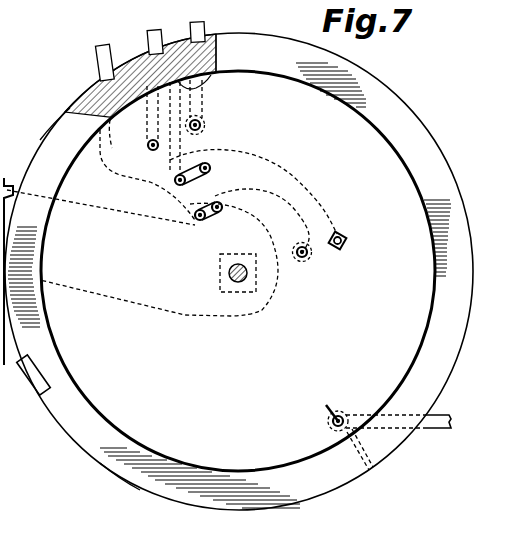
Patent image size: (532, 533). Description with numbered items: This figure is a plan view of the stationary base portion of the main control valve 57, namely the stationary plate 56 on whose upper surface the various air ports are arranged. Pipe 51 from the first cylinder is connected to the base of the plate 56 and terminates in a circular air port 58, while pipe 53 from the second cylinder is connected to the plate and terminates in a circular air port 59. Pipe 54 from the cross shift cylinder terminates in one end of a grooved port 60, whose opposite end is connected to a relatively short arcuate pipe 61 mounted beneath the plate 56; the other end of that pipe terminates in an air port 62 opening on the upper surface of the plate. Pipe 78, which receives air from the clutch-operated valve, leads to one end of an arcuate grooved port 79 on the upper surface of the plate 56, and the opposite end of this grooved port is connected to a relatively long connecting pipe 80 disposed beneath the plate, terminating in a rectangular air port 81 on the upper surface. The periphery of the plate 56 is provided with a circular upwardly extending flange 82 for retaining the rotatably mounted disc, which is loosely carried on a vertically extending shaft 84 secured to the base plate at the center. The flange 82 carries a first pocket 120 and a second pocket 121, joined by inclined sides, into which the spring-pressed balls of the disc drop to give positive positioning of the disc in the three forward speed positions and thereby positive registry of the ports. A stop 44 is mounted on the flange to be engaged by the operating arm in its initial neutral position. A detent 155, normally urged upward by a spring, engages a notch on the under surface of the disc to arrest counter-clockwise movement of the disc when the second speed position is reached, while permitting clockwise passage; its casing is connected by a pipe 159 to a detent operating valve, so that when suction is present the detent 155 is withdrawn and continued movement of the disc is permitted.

The bracket 44 is at (38, 391).
The pipe 51 is at (213, 37).
The pipe 53 is at (149, 36).
The pipe 54 is at (105, 66).
The stationary plate 56 is at (238, 271).
The main control valve 57 is at (114, 481).
The circular air port 58 is at (204, 122).
The circular air port 59 is at (147, 145).
The grooved port 60 is at (219, 203).
The arcuate pipe 61 is at (261, 199).
The air port 62 is at (306, 262).
The pipe 78 is at (188, 30).
The arcuate grooved port 79 is at (200, 175).
The connecting pipe 80 is at (308, 178).
The rectangular air port 81 is at (349, 250).
The flange 82 is at (386, 97).
The shaft 84 is at (229, 273).
The pocket 120 is at (216, 80).
The pocket 121 is at (56, 127).
The detent 155 is at (328, 425).
The pipe 159 is at (434, 429).